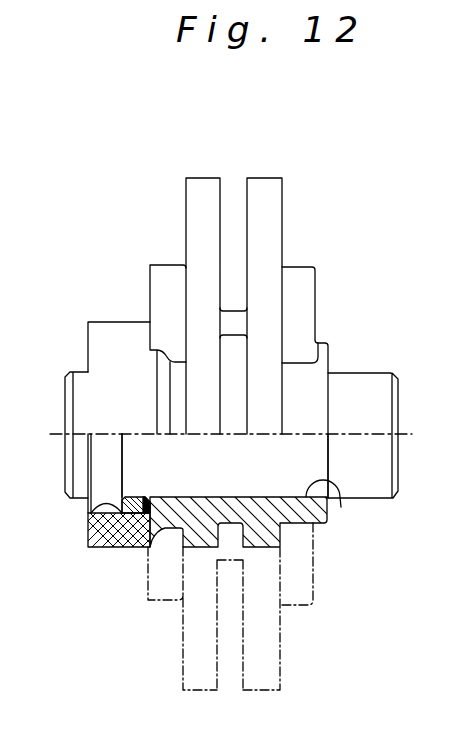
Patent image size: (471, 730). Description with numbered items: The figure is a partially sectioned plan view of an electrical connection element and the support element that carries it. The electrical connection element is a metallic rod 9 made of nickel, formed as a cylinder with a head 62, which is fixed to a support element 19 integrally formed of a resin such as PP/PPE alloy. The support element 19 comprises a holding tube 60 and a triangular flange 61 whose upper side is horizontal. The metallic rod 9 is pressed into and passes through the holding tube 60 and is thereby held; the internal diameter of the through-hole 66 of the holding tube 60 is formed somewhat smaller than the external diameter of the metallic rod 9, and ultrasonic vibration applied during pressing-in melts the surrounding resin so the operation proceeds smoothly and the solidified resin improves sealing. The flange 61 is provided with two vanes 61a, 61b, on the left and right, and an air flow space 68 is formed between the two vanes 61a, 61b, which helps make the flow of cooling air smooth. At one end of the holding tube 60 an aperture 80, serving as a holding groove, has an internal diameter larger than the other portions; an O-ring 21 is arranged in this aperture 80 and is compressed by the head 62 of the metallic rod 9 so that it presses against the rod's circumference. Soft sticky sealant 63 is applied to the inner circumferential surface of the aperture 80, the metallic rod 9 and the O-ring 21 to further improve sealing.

The metallic rod 9 is at (365, 373).
The support element 19 is at (122, 321).
The O-ring 21 is at (132, 522).
The holding tube 60 is at (293, 530).
The flange 61 is at (298, 106).
The vane 61a is at (268, 188).
The vane 61b is at (202, 194).
The head 62 is at (96, 502).
The sealant 63 is at (116, 528).
The through-hole 66 is at (341, 507).
The air flow space 68 is at (233, 272).
The aperture 80 is at (118, 506).